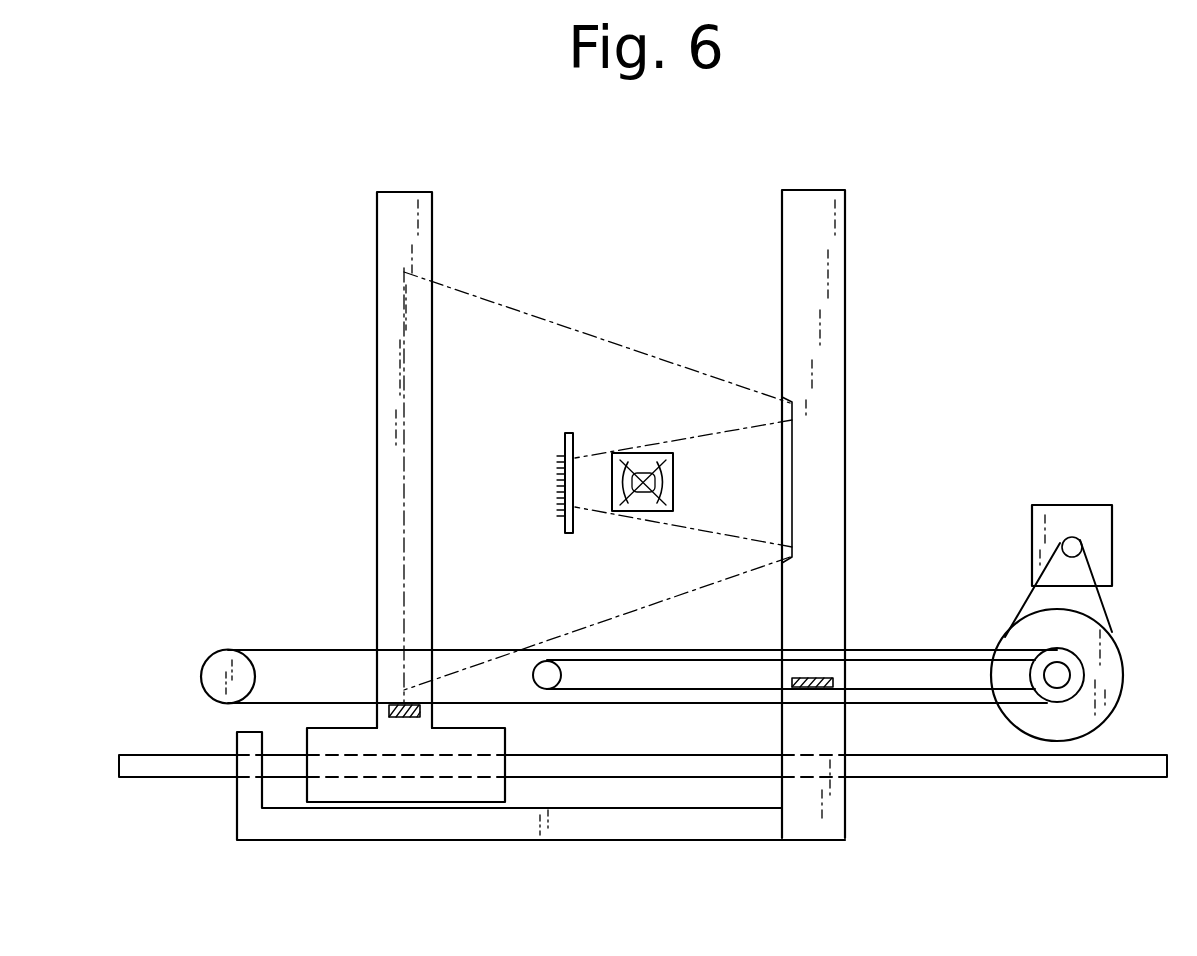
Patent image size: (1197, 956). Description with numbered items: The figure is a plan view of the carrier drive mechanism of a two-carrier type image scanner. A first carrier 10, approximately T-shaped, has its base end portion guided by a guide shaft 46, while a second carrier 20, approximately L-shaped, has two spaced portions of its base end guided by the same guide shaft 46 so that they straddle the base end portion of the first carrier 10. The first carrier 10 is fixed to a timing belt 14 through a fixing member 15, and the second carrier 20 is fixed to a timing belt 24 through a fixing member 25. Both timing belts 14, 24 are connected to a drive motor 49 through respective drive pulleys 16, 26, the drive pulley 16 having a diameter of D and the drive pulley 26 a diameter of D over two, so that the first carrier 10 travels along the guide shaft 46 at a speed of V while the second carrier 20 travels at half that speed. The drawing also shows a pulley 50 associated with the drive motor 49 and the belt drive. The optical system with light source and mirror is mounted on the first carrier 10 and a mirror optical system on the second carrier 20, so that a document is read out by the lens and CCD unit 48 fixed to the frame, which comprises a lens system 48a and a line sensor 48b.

The first carrier 10 is at (432, 263).
The second carrier 20 is at (845, 290).
The lens and CCD unit 48 is at (593, 478).
The lens system 48a is at (636, 513).
The line sensor 48b is at (563, 521).
The drive motor 49 is at (1085, 505).
The timing belt 14 is at (873, 649).
The timing belt 24 is at (915, 659).
The drive pulley 50 is at (1110, 615).
The fixing member 25 is at (795, 686).
The fixing member 15 is at (389, 710).
The guide shaft 46 is at (947, 766).
The drive pulley 26 is at (1047, 683).
The drive pulley 16 is at (1050, 697).